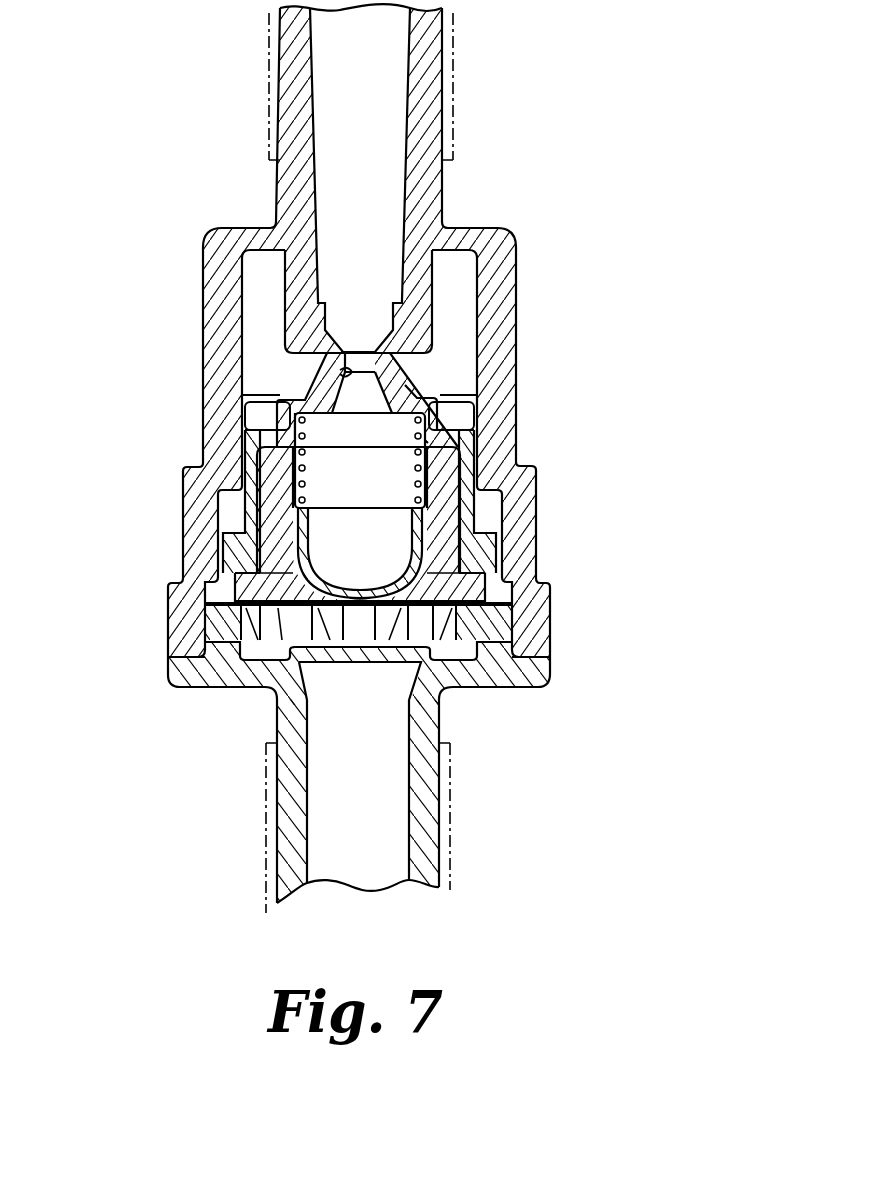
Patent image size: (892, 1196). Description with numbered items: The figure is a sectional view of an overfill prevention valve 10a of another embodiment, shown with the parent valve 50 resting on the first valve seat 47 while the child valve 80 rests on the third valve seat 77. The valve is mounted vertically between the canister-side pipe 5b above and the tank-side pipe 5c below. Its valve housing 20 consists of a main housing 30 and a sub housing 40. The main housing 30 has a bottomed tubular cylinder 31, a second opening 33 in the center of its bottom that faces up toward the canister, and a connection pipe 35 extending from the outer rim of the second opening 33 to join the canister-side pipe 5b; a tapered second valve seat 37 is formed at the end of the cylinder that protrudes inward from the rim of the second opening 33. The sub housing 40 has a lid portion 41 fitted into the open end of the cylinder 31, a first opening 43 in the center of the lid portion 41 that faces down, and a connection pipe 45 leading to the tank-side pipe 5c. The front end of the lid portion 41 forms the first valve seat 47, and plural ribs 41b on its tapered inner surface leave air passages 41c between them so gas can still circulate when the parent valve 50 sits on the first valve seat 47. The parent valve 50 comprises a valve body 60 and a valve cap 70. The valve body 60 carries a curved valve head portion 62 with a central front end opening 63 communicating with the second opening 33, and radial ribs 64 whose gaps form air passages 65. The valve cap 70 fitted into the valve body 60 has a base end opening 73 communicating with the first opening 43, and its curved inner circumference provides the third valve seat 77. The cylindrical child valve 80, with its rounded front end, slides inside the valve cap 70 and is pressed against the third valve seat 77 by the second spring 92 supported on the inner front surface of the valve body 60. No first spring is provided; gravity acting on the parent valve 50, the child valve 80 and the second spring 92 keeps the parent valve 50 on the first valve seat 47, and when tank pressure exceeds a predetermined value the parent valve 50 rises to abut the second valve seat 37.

The overfill prevention valve 10a is at (192, 136).
The canister-side pipe 5b is at (453, 80).
The connection pipe 35 is at (425, 125).
The second opening 33 is at (410, 215).
The cylinder 31 is at (502, 300).
The second valve seat 37 is at (423, 330).
The front end opening 63 is at (343, 373).
The ribs 64 is at (247, 392).
The air passages 65 is at (252, 412).
The valve head portion 62 is at (400, 372).
The second spring 92 is at (420, 472).
The valve body 60 is at (250, 500).
The parent valve 50 is at (112, 475).
The valve cap 70 is at (272, 545).
The child valve 80 is at (413, 545).
The main housing 30 is at (556, 597).
The valve housing 20 is at (655, 568).
The sub housing 40 is at (556, 678).
The lid portion 41 is at (520, 673).
The ribs 41b is at (253, 613).
The air passages 41c is at (222, 618).
The first opening 43 is at (405, 670).
The first valve seat 47 is at (218, 620).
The third valve seat 77 is at (310, 597).
The base end opening 73 is at (390, 602).
The connection pipe 45 is at (288, 858).
The tank-side pipe 5c is at (451, 853).